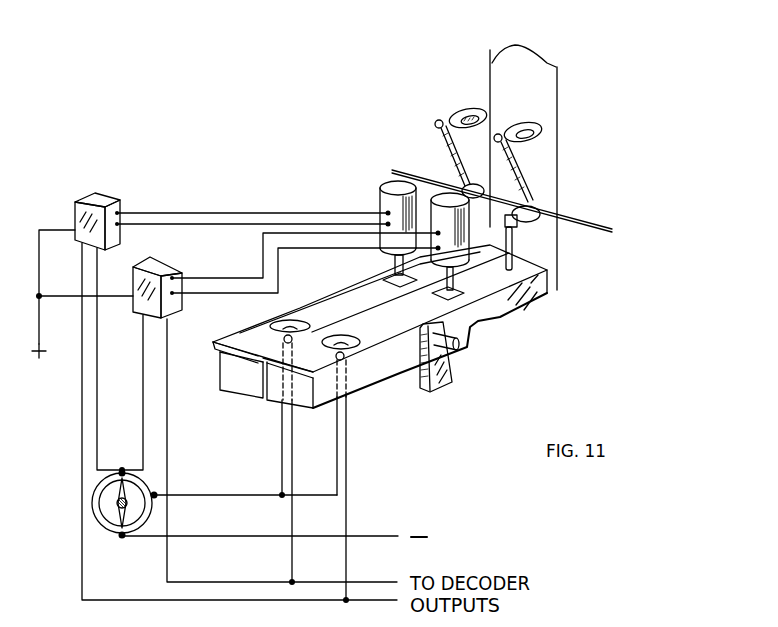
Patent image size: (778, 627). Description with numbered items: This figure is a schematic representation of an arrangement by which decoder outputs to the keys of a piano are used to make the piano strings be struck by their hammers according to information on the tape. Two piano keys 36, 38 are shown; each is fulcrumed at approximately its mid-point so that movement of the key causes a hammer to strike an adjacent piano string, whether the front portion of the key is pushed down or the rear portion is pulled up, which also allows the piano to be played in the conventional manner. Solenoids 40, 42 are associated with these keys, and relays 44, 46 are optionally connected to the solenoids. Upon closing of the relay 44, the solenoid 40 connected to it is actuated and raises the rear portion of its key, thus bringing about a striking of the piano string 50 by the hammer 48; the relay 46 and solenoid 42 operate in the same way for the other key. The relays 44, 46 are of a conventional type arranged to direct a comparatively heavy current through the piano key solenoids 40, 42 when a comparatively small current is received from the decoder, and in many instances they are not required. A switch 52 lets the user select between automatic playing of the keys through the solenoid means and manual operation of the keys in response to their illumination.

The piano key 36 is at (235, 381).
The piano key 38 is at (362, 381).
The solenoid 40 is at (383, 178).
The solenoid 42 is at (457, 256).
The relay 44 is at (107, 200).
The relay 46 is at (161, 270).
The hammer 48 is at (461, 107).
The piano string 50 is at (488, 88).
The switch 52 is at (97, 500).